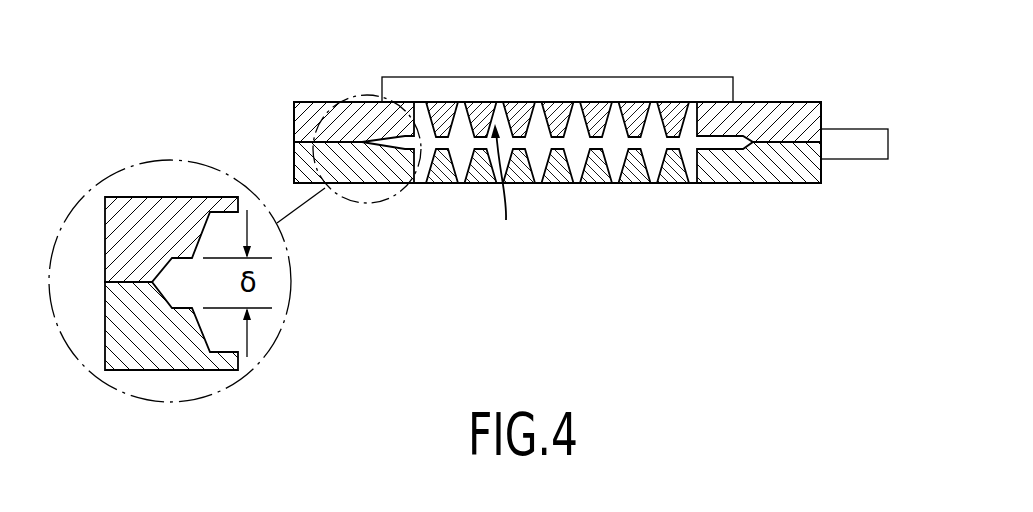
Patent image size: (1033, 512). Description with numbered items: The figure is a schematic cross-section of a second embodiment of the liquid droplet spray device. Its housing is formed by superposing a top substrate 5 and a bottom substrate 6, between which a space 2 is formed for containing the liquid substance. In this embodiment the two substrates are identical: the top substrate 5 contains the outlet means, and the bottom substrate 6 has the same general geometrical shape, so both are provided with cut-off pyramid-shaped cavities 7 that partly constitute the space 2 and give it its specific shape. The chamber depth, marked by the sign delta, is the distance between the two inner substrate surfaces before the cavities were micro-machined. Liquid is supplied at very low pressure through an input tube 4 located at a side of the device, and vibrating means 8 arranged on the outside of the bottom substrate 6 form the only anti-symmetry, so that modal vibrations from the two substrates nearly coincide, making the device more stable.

The space 2 is at (614, 142).
The input tube 4 is at (862, 160).
The top substrate 5 is at (719, 176).
The bottom substrate 6 is at (798, 114).
The cavities 7 is at (504, 188).
The vibrating means 8 is at (554, 86).